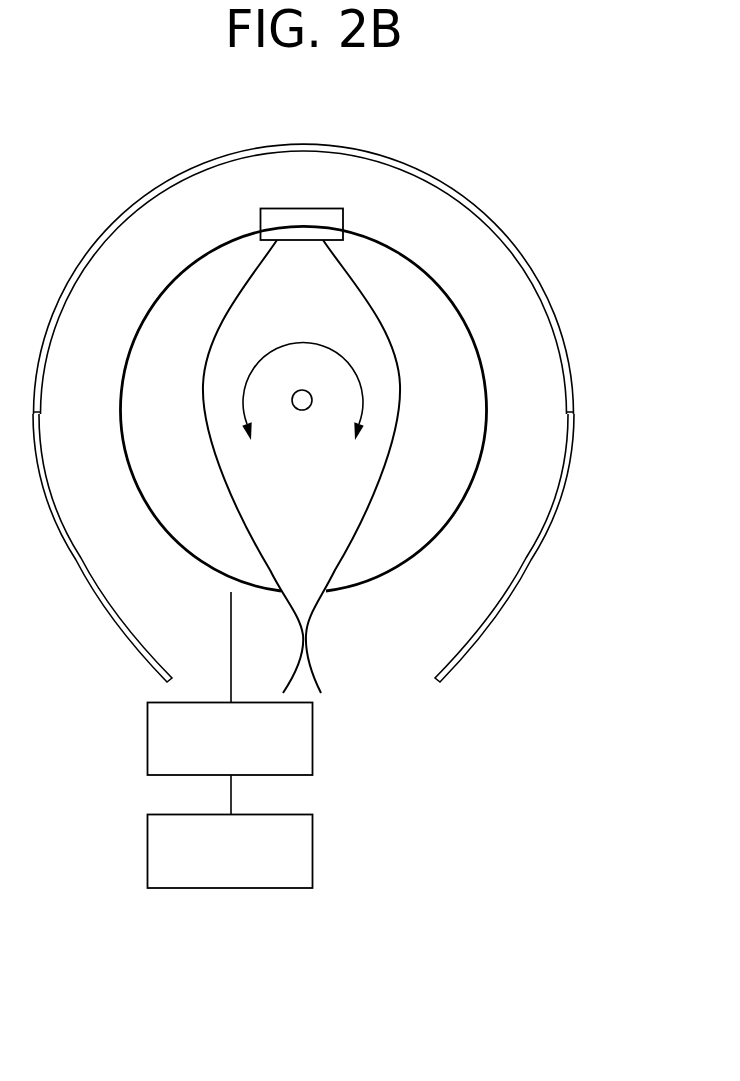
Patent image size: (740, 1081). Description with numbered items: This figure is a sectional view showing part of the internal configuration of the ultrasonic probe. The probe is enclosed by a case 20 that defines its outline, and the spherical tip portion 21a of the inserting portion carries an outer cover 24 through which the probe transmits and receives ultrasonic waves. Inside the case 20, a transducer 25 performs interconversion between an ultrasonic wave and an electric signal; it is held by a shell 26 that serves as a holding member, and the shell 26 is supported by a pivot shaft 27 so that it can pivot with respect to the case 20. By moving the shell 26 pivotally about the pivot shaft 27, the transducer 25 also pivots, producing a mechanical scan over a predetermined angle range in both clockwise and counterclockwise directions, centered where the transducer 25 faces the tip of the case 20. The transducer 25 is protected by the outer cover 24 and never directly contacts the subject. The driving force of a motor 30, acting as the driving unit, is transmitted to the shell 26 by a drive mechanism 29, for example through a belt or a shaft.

The case 20 is at (477, 642).
The tip portion 21a is at (566, 345).
The outer cover 24 is at (458, 197).
The transducer 25 is at (300, 214).
The shell 26 is at (397, 575).
The pivot shaft 27 is at (302, 411).
The drive mechanism 29 is at (147, 735).
The motor 30 is at (147, 848).